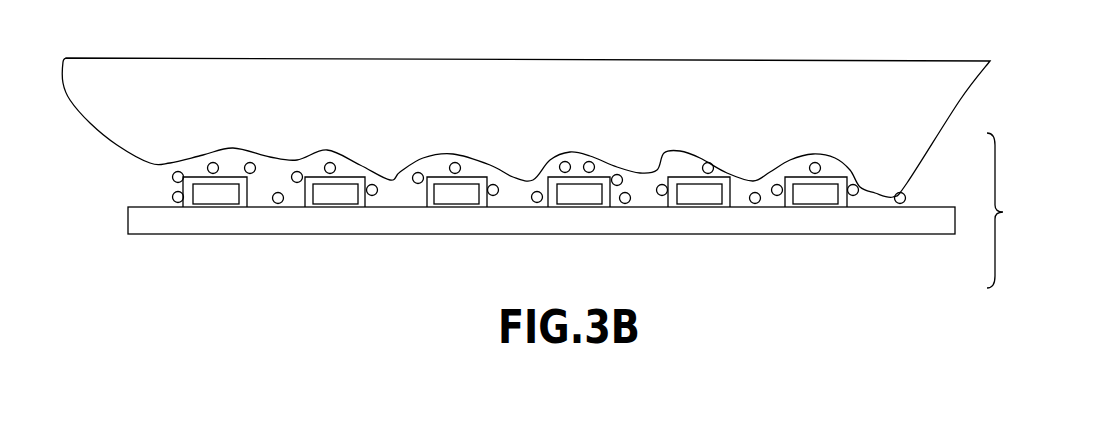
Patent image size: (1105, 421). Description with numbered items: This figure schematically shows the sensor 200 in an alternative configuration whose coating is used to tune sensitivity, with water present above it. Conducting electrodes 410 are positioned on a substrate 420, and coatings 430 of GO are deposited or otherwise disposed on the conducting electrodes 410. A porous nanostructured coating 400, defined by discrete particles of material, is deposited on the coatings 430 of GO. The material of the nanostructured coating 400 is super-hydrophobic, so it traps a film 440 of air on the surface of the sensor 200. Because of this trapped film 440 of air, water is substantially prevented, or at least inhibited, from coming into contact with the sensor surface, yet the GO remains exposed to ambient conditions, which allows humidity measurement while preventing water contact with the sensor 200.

The sensor 200 is at (1010, 205).
The porous nanostructured coating 400 is at (449, 168).
The conducting electrodes 410 is at (217, 197).
The substrate 420 is at (785, 226).
The coatings of GO 430 is at (200, 176).
The film of air 440 is at (130, 183).